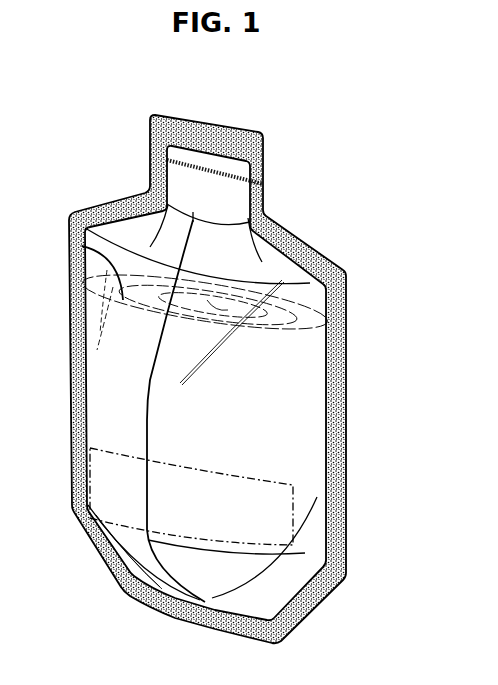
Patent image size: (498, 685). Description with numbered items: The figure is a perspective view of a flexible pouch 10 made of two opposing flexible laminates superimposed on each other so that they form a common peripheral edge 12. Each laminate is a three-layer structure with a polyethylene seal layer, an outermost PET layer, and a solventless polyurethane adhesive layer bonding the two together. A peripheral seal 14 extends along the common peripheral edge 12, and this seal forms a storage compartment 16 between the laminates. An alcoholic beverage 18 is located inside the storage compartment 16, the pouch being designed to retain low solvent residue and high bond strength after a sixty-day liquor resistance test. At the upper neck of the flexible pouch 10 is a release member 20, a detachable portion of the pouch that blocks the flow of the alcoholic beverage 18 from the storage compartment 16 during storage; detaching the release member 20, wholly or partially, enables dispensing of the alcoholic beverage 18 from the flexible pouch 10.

The flexible pouch 10 is at (200, 384).
The common peripheral edge 12 is at (200, 384).
The peripheral seal 14 is at (70, 375).
The storage compartment 16 is at (82, 247).
The alcoholic beverage 18 is at (202, 424).
The release member 20 is at (150, 163).